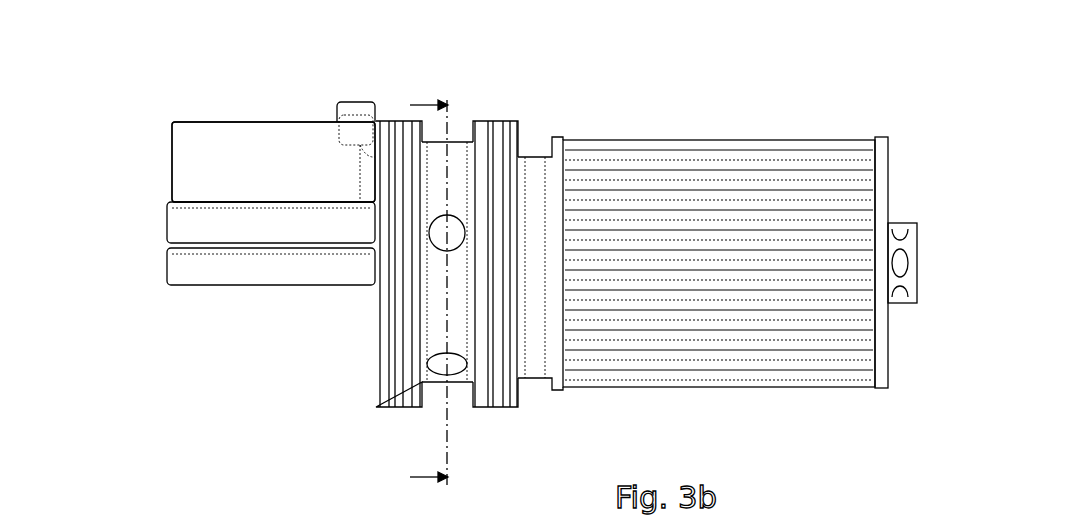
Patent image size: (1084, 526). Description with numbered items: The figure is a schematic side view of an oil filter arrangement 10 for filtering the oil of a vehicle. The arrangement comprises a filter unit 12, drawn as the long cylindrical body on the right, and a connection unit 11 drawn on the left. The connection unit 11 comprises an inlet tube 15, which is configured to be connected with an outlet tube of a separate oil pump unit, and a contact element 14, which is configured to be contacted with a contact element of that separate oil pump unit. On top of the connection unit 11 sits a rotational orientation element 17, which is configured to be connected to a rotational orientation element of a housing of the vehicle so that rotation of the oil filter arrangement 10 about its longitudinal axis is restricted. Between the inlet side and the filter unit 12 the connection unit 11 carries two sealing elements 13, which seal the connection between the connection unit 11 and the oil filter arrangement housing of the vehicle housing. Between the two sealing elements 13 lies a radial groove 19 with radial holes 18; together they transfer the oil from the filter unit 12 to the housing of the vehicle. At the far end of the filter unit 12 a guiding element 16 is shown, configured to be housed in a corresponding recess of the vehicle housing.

The oil filter arrangement 10 is at (297, 70).
The connection unit 11 is at (298, 127).
The filter unit 12 is at (653, 141).
The sealing elements 13 is at (495, 122).
The contact element 14 is at (167, 220).
The inlet tube 15 is at (178, 152).
The guiding element 16 is at (912, 225).
The rotational orientation element 17 is at (347, 127).
The radial holes 18 is at (453, 236).
The radial groove 19 is at (453, 383).